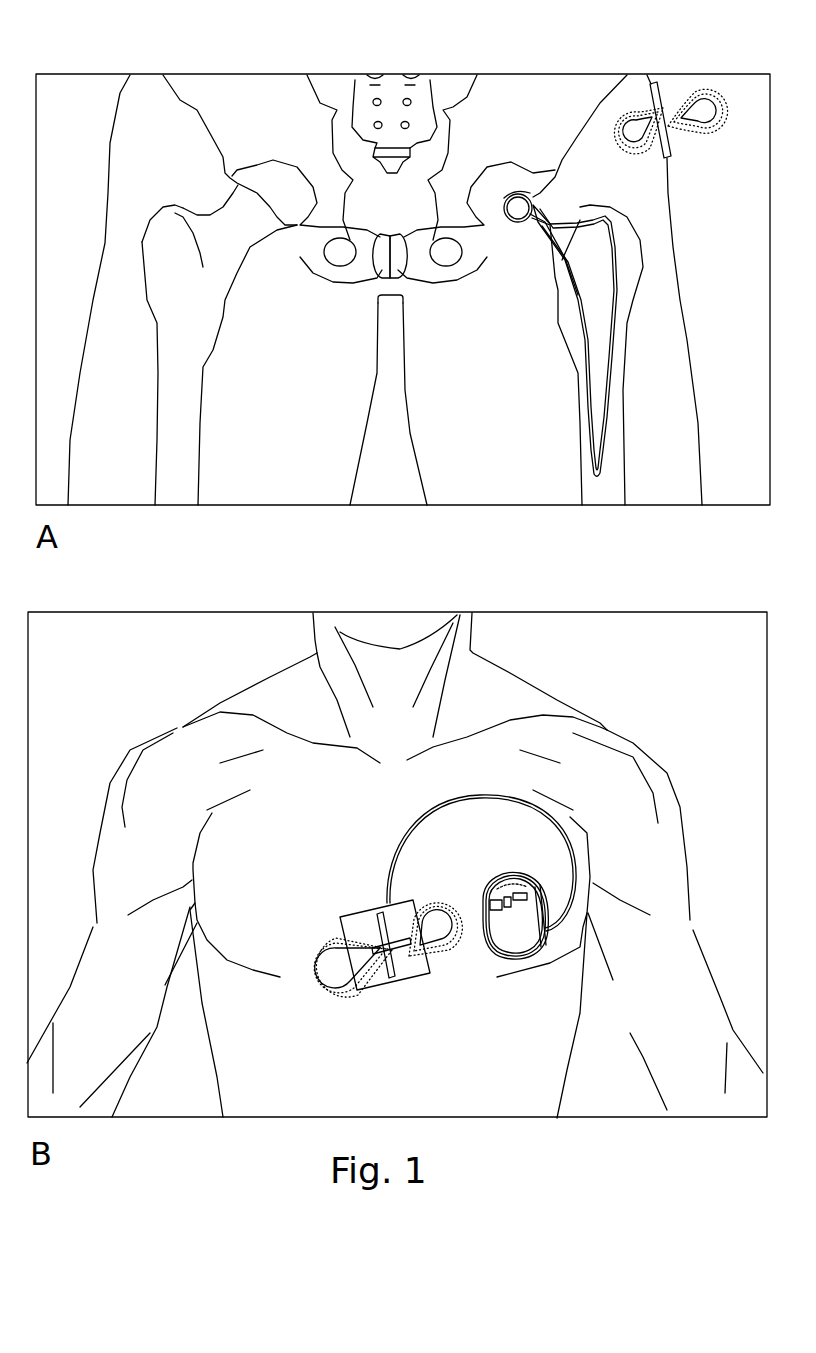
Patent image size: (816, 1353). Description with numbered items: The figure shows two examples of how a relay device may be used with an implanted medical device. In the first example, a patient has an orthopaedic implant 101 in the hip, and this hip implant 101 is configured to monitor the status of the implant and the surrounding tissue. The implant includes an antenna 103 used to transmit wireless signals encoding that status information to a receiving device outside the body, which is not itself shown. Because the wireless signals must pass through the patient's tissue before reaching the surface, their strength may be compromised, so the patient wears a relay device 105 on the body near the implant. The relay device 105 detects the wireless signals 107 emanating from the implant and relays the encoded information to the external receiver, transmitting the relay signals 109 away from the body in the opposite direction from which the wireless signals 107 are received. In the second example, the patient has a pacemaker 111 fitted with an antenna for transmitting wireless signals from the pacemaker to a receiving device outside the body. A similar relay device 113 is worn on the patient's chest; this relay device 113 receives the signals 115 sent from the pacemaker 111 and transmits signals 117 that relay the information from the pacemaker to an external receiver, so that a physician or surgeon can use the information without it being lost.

The orthopaedic implant 101 is at (563, 242).
The antenna 103 is at (596, 216).
The relay device 105 is at (673, 151).
The wireless signals 107 is at (633, 131).
The relay signals 109 is at (713, 115).
The pacemaker 111 is at (493, 935).
The relay device 113 is at (407, 972).
The signals 115 is at (432, 897).
The signals 117 is at (337, 952).